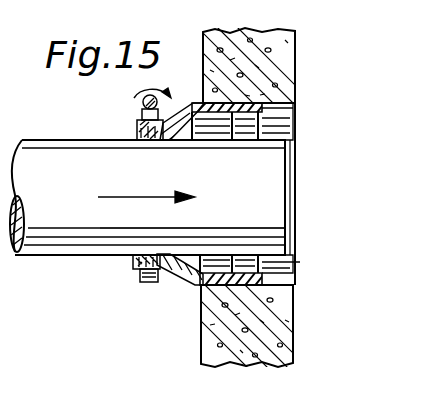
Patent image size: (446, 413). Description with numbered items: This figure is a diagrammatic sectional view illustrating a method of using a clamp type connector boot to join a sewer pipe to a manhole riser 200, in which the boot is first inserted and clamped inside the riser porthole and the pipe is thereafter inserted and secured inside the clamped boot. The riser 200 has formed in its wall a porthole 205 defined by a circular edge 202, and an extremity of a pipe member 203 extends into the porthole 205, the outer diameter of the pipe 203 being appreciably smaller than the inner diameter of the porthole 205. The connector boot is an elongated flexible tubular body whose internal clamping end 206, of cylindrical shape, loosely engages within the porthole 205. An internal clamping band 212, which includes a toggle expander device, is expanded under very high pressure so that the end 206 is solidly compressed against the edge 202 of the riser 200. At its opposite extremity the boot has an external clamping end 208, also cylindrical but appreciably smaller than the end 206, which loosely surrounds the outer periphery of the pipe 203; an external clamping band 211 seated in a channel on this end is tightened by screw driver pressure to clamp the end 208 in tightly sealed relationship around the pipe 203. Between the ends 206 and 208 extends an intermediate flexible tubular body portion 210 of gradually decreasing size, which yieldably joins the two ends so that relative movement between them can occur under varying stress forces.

The manhole riser 200 is at (283, 50).
The circular edge 202 is at (275, 288).
The pipe member 203 is at (55, 149).
The porthole 205 is at (282, 126).
The internal clamping end 206 is at (205, 108).
The external clamping end 208 is at (133, 263).
The intermediate flexible tubular body portion 210 is at (178, 278).
The external clamping band 211 is at (146, 283).
The internal clamping band 212 is at (298, 263).